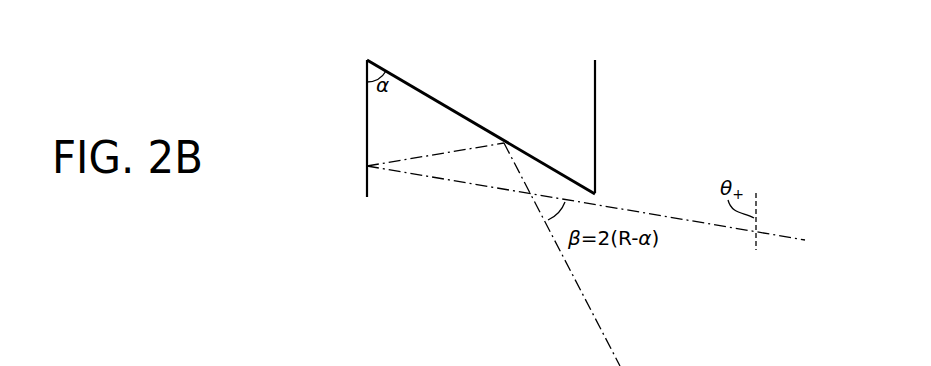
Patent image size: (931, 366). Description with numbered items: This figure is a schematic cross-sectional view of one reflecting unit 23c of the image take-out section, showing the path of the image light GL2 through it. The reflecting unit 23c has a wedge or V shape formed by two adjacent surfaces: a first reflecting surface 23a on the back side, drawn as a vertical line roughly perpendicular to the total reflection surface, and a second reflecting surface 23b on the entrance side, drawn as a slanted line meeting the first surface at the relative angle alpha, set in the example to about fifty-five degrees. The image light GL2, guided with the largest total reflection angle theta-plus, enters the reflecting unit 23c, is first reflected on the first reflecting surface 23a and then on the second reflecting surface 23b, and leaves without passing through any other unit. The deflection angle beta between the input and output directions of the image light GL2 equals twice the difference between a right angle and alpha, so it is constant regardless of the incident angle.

The first reflecting surface 23a is at (371, 168).
The second reflecting surface 23b is at (430, 99).
The reflecting unit 23c is at (466, 91).
The image light GL2 is at (563, 257).